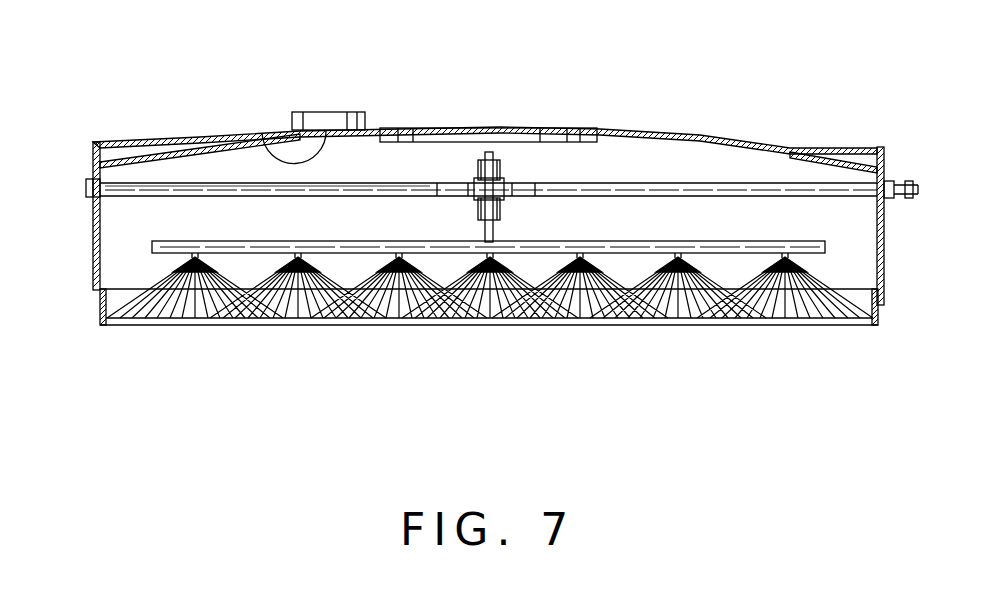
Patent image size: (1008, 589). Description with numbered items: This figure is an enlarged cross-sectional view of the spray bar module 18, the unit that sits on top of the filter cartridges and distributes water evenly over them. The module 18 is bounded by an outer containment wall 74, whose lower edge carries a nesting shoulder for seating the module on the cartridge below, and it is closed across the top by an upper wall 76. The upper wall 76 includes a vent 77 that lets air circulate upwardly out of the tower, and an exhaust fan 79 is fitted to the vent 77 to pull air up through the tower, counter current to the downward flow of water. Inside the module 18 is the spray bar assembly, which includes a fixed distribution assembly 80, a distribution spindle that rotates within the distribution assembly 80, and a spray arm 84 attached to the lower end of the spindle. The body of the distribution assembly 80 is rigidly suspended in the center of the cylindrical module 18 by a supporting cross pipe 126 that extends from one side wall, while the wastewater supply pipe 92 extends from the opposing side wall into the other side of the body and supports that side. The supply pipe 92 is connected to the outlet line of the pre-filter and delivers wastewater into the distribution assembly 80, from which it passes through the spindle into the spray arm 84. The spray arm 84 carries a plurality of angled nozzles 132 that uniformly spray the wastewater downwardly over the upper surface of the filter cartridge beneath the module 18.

The spray bar module 18 is at (212, 357).
The outer containment wall 74 is at (93, 227).
The upper wall 76 is at (632, 128).
The vent 77 is at (262, 133).
The exhaust fan 79 is at (333, 112).
The fixed distribution assembly 80 is at (472, 163).
The spray arm 84 is at (663, 243).
The wastewater supply pipe 92 is at (560, 186).
The supporting cross pipe 126 is at (183, 190).
The angled nozzles 132 is at (337, 260).